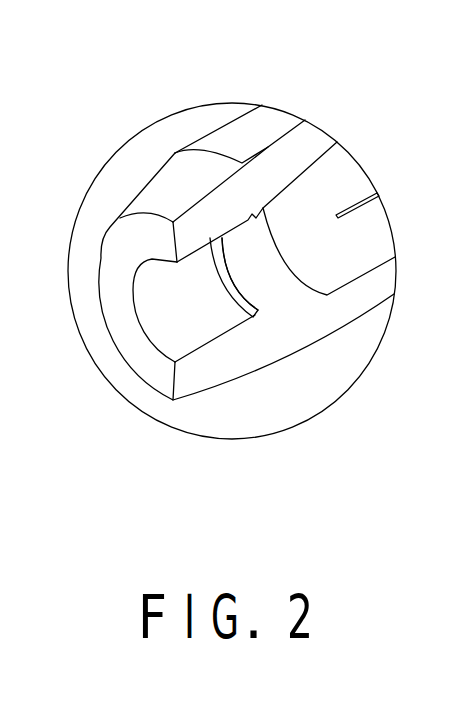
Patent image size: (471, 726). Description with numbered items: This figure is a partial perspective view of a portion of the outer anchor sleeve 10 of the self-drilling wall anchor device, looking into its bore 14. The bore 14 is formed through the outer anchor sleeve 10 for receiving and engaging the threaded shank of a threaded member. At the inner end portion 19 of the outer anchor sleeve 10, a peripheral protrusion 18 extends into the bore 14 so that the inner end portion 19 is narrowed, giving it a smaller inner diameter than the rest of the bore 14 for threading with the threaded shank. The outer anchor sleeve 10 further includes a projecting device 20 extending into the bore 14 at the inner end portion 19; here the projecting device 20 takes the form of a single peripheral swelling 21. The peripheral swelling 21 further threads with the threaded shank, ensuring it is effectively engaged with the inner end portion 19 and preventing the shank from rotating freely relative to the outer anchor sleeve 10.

The outer anchor sleeve 10 is at (265, 123).
The bore 14 is at (163, 297).
The peripheral protrusion 18 is at (218, 340).
The inner end portion 19 is at (197, 398).
The projecting device 20 is at (214, 238).
The peripheral swelling 21 is at (240, 287).